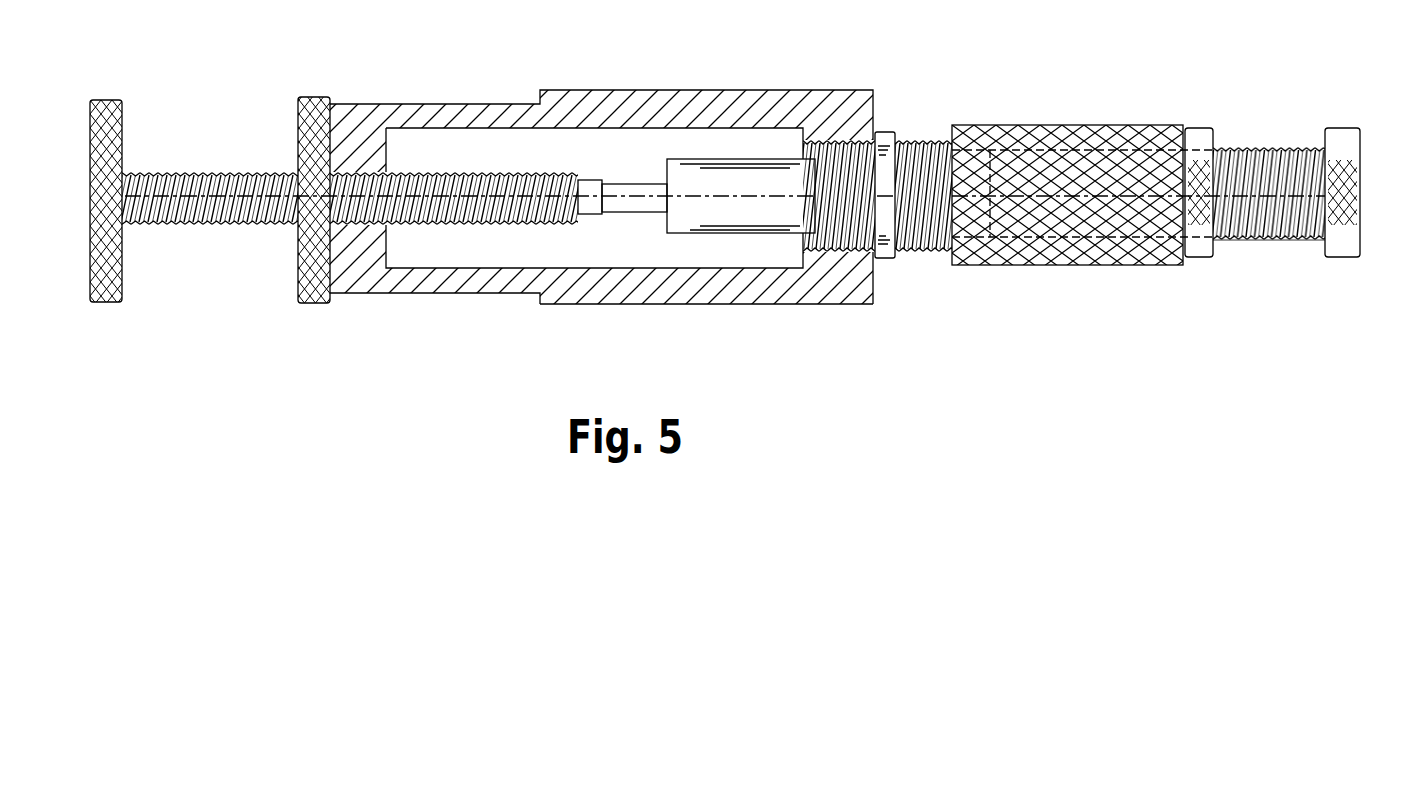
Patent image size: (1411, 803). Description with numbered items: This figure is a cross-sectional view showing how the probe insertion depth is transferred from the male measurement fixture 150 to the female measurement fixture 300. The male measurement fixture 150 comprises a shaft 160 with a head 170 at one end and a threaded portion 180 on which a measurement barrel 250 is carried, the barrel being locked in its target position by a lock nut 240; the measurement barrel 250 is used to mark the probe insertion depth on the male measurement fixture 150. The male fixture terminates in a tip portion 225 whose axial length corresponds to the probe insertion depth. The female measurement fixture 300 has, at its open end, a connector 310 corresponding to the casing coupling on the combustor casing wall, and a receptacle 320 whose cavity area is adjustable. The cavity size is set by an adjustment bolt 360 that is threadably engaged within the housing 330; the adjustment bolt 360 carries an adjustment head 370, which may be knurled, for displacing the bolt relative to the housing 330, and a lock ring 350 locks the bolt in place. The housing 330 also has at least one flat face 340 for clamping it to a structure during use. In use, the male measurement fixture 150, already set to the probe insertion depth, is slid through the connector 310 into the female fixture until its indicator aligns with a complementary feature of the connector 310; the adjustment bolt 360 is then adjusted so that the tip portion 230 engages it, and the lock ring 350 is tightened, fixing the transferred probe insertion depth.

The male measurement fixture 150 is at (1149, 300).
The shaft 160 is at (1282, 131).
The head 170 is at (1343, 258).
The threaded portion 180 is at (1274, 255).
The tip portion 225 is at (634, 165).
The tip portion 230 is at (605, 180).
The lock nut 240 is at (1200, 128).
The measurement barrel 250 is at (1021, 278).
The female measurement fixture 300 is at (675, 347).
The connector 310 is at (925, 255).
The receptacle 320 is at (652, 250).
The housing 330 is at (565, 292).
The flat face 340 is at (404, 96).
The lock ring 350 is at (312, 304).
The adjustment bolt 360 is at (171, 236).
The adjustment head 370 is at (105, 303).